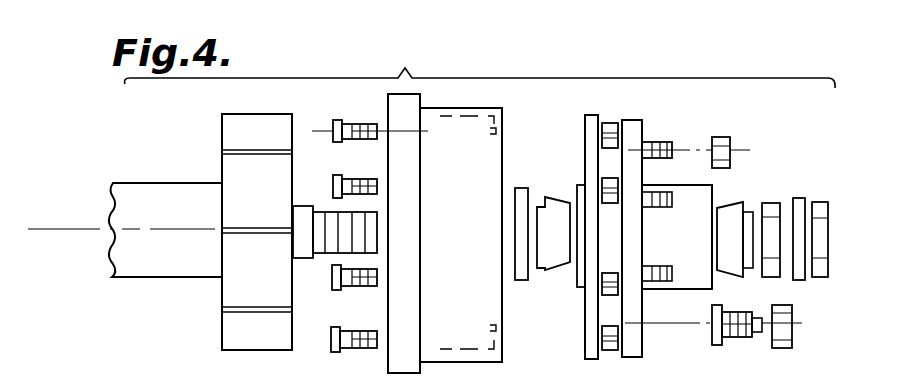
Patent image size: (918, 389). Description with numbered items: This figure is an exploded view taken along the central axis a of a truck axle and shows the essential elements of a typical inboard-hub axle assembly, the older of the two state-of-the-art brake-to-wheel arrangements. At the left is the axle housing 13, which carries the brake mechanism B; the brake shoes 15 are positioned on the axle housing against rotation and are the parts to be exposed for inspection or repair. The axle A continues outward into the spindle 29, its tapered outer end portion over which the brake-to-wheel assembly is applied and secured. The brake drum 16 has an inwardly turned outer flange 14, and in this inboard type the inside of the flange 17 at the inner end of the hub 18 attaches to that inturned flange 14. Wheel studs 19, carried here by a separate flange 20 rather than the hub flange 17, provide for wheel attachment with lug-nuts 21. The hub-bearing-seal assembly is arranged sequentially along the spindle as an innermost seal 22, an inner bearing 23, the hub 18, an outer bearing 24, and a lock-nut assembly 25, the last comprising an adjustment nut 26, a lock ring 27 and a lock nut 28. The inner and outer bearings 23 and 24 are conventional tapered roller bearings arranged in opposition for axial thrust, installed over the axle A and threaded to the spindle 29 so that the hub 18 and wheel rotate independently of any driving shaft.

The axle housing 13 is at (112, 251).
The central axis a is at (68, 228).
The brake shoes 15 is at (238, 127).
The brake mechanism B is at (210, 353).
The spindle 29 is at (331, 250).
The axle A is at (311, 205).
The inwardly turned outer flange 14 is at (492, 320).
The brake drum 16 is at (473, 107).
The innermost seal 22 is at (522, 283).
The inner bearing 23 is at (560, 272).
The flange 17 is at (586, 115).
The separate flange 20 is at (635, 125).
The wheel studs 19 is at (665, 142).
The lug-nuts 21 is at (735, 143).
The hub 18 is at (703, 197).
The outer bearing 24 is at (735, 200).
The adjustment nut 26 is at (773, 280).
The lock ring 27 is at (797, 282).
The lock nut 28 is at (820, 242).
The lock-nut assembly 25 is at (843, 237).